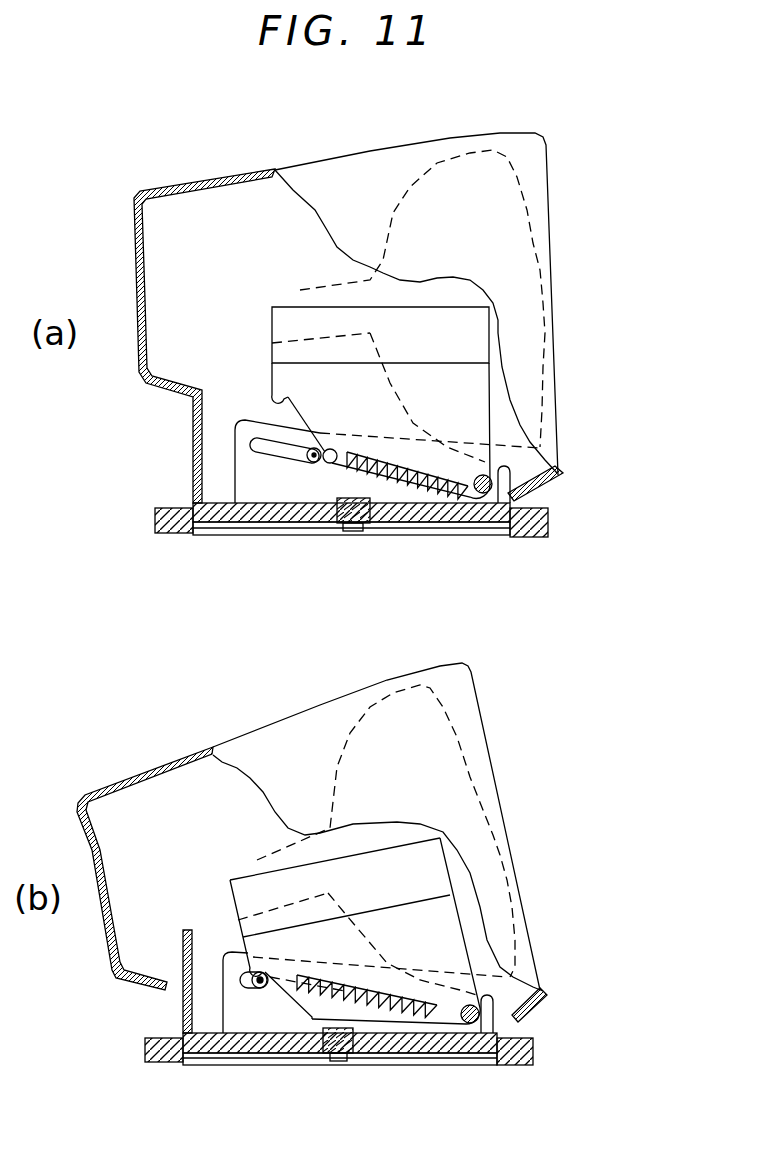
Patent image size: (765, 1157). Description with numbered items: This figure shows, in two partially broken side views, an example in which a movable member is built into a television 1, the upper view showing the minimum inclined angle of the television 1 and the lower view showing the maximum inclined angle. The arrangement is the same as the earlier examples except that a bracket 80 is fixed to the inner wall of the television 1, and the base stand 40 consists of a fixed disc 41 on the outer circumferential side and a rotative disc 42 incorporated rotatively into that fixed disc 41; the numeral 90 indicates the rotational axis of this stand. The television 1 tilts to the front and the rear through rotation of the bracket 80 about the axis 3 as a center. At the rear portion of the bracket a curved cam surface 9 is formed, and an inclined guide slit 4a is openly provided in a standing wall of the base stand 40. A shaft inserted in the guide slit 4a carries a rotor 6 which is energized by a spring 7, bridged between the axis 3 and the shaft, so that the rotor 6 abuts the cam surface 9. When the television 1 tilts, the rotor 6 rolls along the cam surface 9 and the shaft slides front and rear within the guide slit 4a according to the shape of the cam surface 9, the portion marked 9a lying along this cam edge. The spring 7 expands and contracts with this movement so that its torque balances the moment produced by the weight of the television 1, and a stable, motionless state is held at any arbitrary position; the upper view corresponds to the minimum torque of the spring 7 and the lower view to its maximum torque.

The television 1 is at (332, 168).
The bracket 80 is at (291, 305).
The cam surface 9 is at (293, 1003).
The cam edge of lock plate 9a is at (266, 400).
The inclined guide slit 4a is at (257, 437).
The rotor 6 is at (308, 462).
The spring 7 is at (378, 445).
The axis 3 is at (482, 473).
The base stand 40 is at (152, 507).
The fixed disc 41 is at (555, 518).
The rotative disc 42 is at (485, 535).
The rotational axis 90 is at (352, 531).